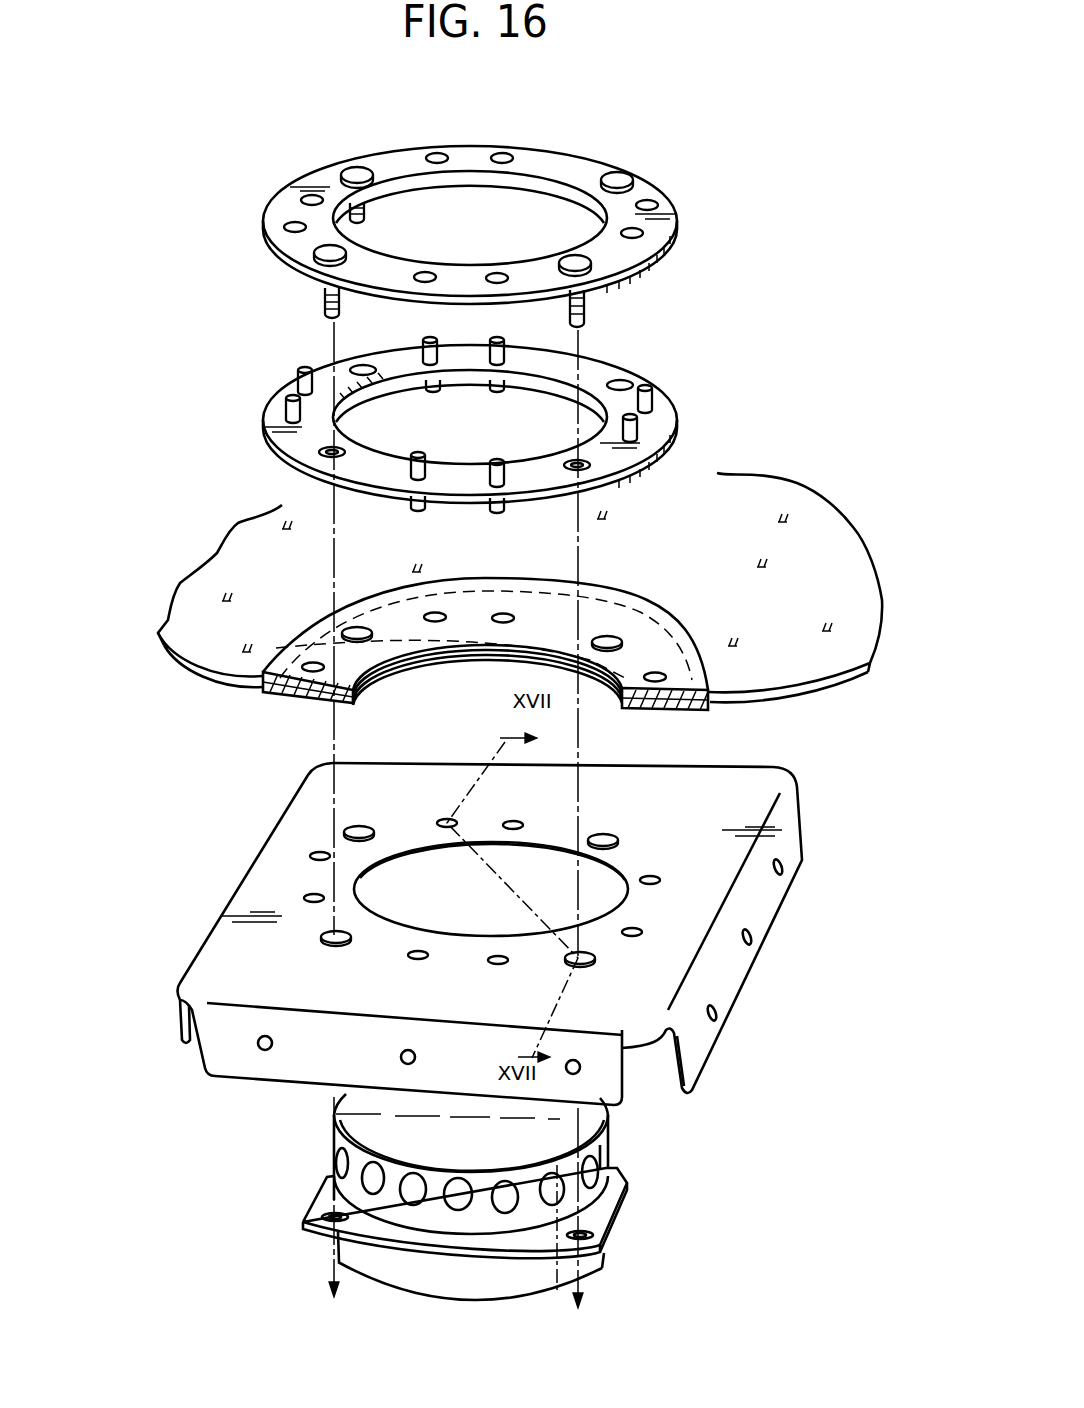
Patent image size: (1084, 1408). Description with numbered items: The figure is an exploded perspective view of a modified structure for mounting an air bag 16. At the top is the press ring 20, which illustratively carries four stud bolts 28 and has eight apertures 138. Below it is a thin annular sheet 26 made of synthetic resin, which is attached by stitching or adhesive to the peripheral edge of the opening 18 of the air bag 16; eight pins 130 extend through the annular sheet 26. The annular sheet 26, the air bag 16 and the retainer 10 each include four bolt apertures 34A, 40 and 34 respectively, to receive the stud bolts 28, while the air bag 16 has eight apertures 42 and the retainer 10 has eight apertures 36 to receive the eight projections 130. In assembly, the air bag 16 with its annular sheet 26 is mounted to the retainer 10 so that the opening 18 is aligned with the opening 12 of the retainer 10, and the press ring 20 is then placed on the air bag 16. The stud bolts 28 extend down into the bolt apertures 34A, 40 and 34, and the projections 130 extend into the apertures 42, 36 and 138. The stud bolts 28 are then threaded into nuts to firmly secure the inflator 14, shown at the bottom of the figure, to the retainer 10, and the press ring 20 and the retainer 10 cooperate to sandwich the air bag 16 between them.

The retainer 10 is at (765, 808).
The opening 12 is at (418, 846).
The inflator 14 is at (626, 1236).
The air bag 16 is at (828, 668).
The opening 18 is at (460, 665).
The press ring 20 is at (655, 182).
The annular sheet 26 is at (600, 370).
The stud bolts 28 is at (326, 300).
The bolt apertures 34 is at (345, 828).
The bolt apertures 34A is at (358, 366).
The apertures 36 is at (304, 896).
The bolt apertures 40 is at (360, 627).
The apertures 42 is at (504, 613).
The pins 130 is at (497, 346).
The apertures 138 is at (502, 153).